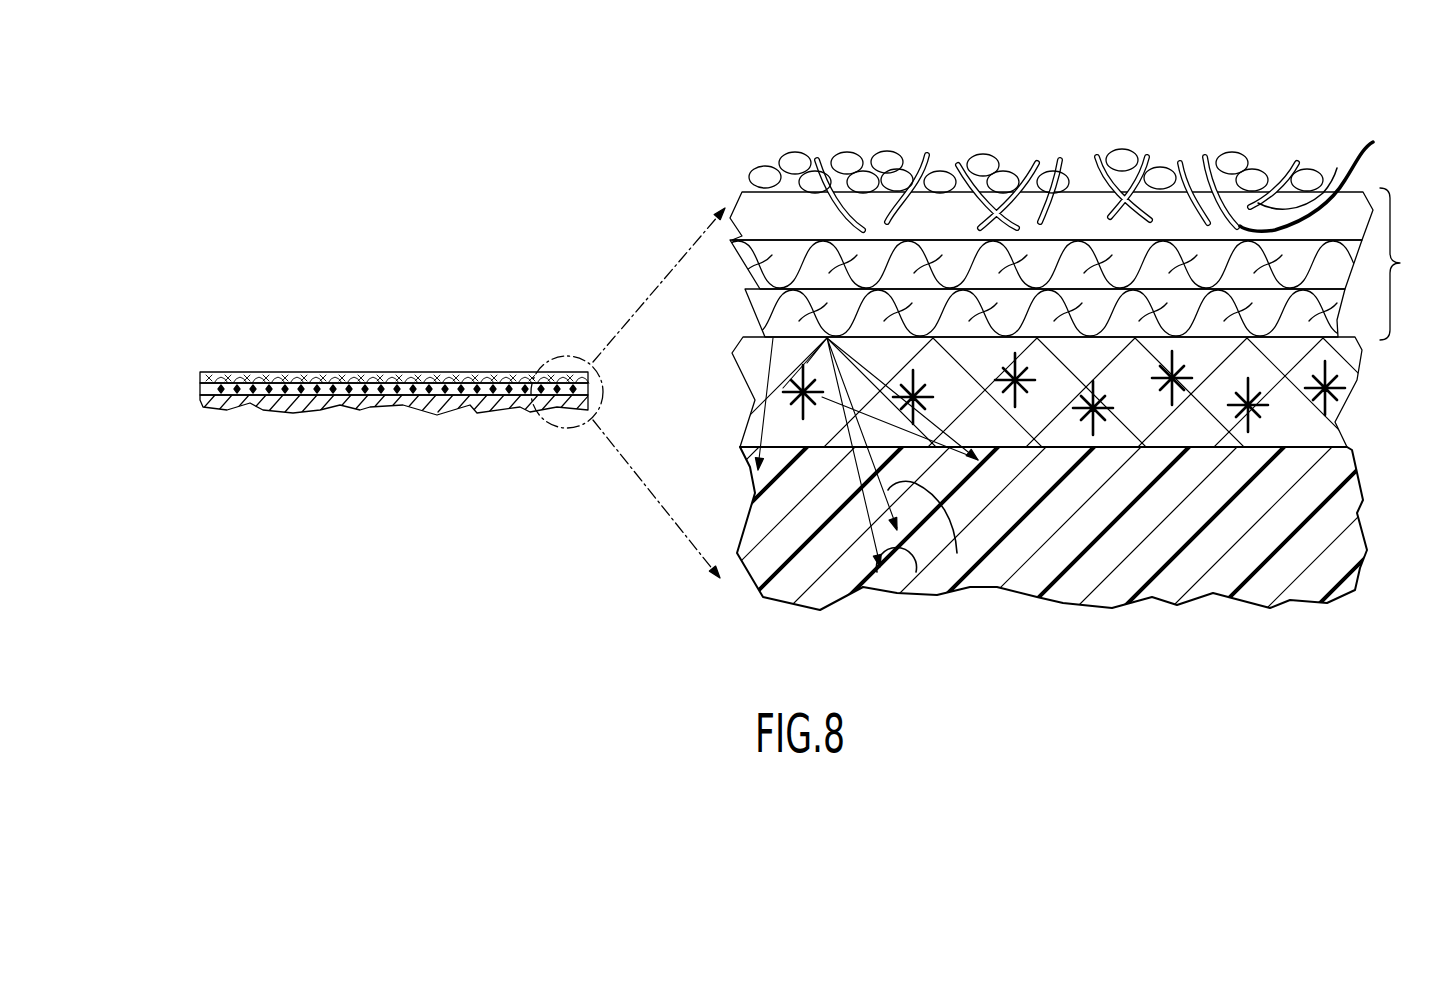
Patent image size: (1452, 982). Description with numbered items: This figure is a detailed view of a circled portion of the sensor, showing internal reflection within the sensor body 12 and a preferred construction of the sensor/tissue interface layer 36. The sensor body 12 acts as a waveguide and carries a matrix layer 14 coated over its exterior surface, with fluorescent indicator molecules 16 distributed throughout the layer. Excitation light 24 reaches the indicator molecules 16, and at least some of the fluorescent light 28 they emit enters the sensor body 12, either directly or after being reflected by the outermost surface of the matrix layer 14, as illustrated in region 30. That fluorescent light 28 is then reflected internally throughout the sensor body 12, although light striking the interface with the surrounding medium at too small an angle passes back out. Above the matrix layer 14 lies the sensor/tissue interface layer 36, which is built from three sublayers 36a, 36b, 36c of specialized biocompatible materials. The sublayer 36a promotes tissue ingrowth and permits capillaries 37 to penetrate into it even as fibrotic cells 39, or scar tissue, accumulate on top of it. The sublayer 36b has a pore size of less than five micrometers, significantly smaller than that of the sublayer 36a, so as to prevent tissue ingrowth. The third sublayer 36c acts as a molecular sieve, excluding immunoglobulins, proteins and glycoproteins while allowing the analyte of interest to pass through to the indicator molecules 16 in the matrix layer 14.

The sensor body 12 is at (242, 407).
The matrix layer 14 is at (199, 388).
The fluorescent indicator molecules 16 is at (1330, 376).
The excitation light 24 is at (793, 420).
The fluorescent light 28 is at (916, 572).
The region 30 is at (770, 389).
The sensor/tissue interface layer 36 is at (263, 373).
The tissue ingrowth sublayer 36a is at (753, 203).
The sublayer 36b is at (748, 253).
The molecular weight cut-off sublayer 36c is at (783, 323).
The capillaries 37 is at (1322, 178).
The fibrotic cells 39 is at (1051, 173).